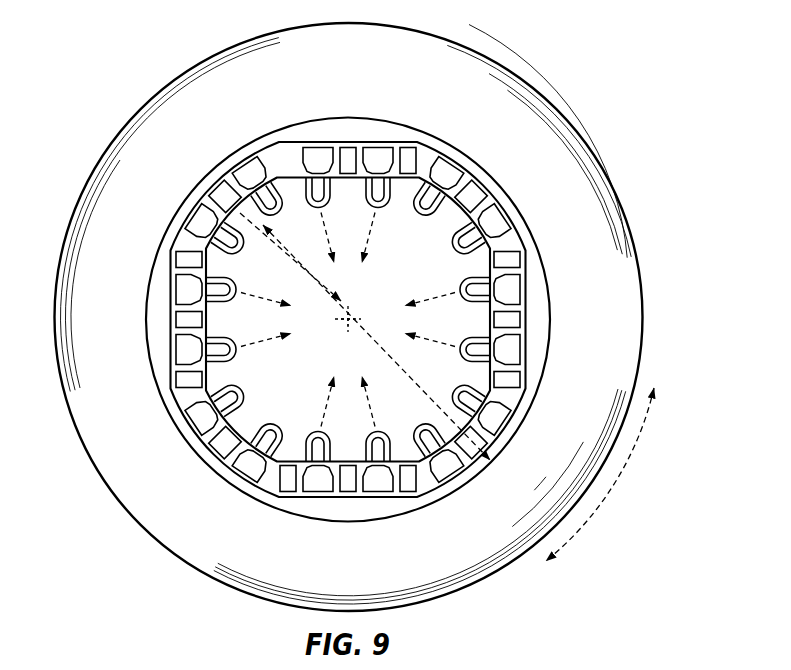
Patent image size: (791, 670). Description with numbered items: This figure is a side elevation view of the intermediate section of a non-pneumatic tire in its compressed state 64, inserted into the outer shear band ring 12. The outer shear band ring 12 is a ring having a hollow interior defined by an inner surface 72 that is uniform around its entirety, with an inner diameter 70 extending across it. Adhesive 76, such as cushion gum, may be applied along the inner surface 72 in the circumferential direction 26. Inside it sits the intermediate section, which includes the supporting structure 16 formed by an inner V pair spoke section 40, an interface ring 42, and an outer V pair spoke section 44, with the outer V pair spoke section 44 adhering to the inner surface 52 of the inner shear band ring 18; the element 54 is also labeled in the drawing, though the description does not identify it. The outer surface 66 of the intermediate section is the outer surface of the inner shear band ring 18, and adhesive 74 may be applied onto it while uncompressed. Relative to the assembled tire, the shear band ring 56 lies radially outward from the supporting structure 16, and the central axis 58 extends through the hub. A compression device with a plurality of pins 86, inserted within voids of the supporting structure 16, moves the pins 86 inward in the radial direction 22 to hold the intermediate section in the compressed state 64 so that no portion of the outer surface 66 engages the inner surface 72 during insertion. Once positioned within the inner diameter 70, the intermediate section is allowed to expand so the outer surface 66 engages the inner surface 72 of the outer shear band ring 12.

The outer shear band ring 12 is at (165, 522).
The supporting structure 16 is at (418, 163).
The inner shear band ring 18 is at (185, 422).
The radial direction 22 is at (280, 243).
The circumferential direction 26 is at (613, 485).
The inner V pair spoke section 40 is at (273, 418).
The interface ring 42 is at (477, 230).
The outer V pair spoke section 44 is at (507, 260).
The inner surface 52 is at (496, 413).
The side pocket 54 is at (521, 363).
The shear band ring 56 is at (176, 150).
The central axis 58 is at (348, 314).
The compressed state 64 is at (169, 297).
The outer surface 66 is at (342, 139).
The inner diameter 70 is at (216, 180).
The inner surface 72 is at (169, 268).
The adhesive 74 is at (530, 316).
The adhesive 76 is at (413, 123).
The pins 86 is at (312, 167).